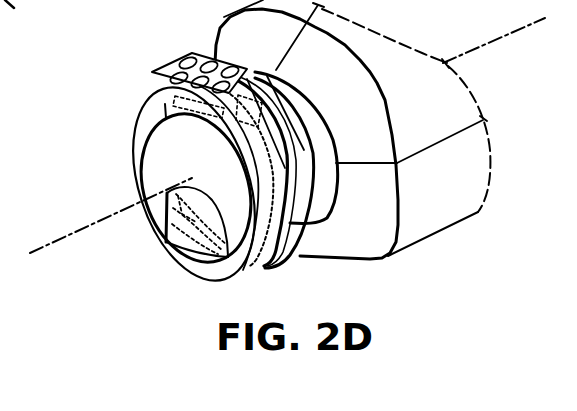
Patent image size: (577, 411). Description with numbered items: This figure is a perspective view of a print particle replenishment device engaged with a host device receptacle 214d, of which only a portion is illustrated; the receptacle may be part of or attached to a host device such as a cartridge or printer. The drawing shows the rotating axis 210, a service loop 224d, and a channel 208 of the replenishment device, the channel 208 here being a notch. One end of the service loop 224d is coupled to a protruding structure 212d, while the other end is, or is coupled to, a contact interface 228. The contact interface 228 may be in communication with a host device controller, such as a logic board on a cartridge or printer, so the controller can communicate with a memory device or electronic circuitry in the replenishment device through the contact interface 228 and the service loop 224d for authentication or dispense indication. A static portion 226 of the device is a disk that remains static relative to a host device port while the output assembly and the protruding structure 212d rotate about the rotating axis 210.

The channel 208 is at (162, 228).
The rotating axis 210 is at (55, 240).
The protruding structure 212d is at (276, 143).
The host device receptacle 214d is at (137, 117).
The service loop 224d is at (302, 246).
The static portion 226 is at (160, 160).
The contact interface 228 is at (160, 72).